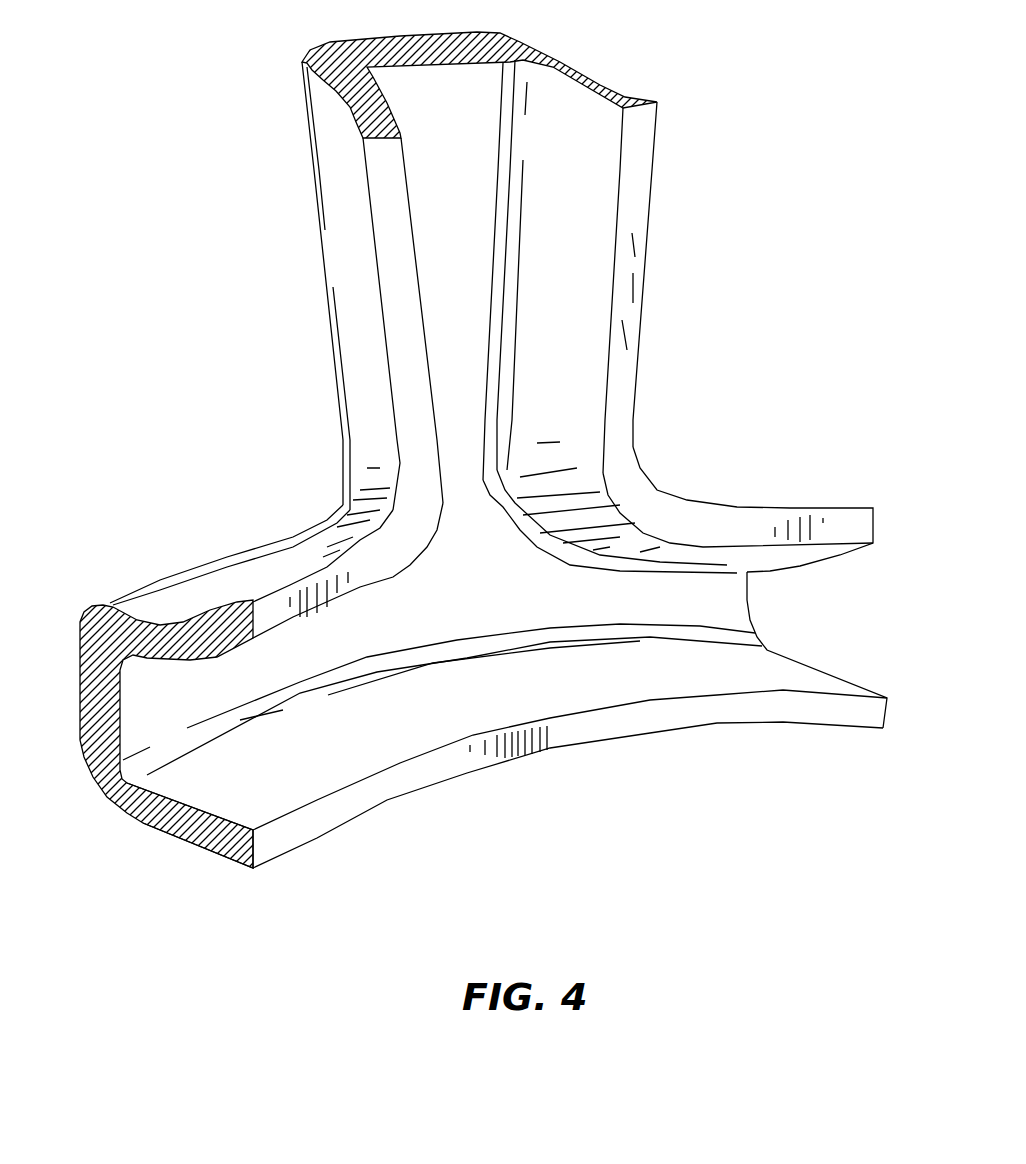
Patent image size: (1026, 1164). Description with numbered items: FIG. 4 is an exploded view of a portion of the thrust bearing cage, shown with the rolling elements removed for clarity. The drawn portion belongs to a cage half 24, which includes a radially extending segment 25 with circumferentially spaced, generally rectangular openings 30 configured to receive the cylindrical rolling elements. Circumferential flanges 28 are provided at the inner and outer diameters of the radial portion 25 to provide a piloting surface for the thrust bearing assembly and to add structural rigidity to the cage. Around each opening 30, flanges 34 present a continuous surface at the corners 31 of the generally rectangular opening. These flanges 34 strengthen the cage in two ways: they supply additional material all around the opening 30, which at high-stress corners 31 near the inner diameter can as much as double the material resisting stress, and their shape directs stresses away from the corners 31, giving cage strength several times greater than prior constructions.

The cage half 24 is at (737, 795).
The radially extending segment 25 is at (90, 727).
The circumferential flange 28 is at (223, 840).
The opening 30 is at (213, 395).
The corner 31 is at (340, 515).
The flange 34 is at (347, 247).